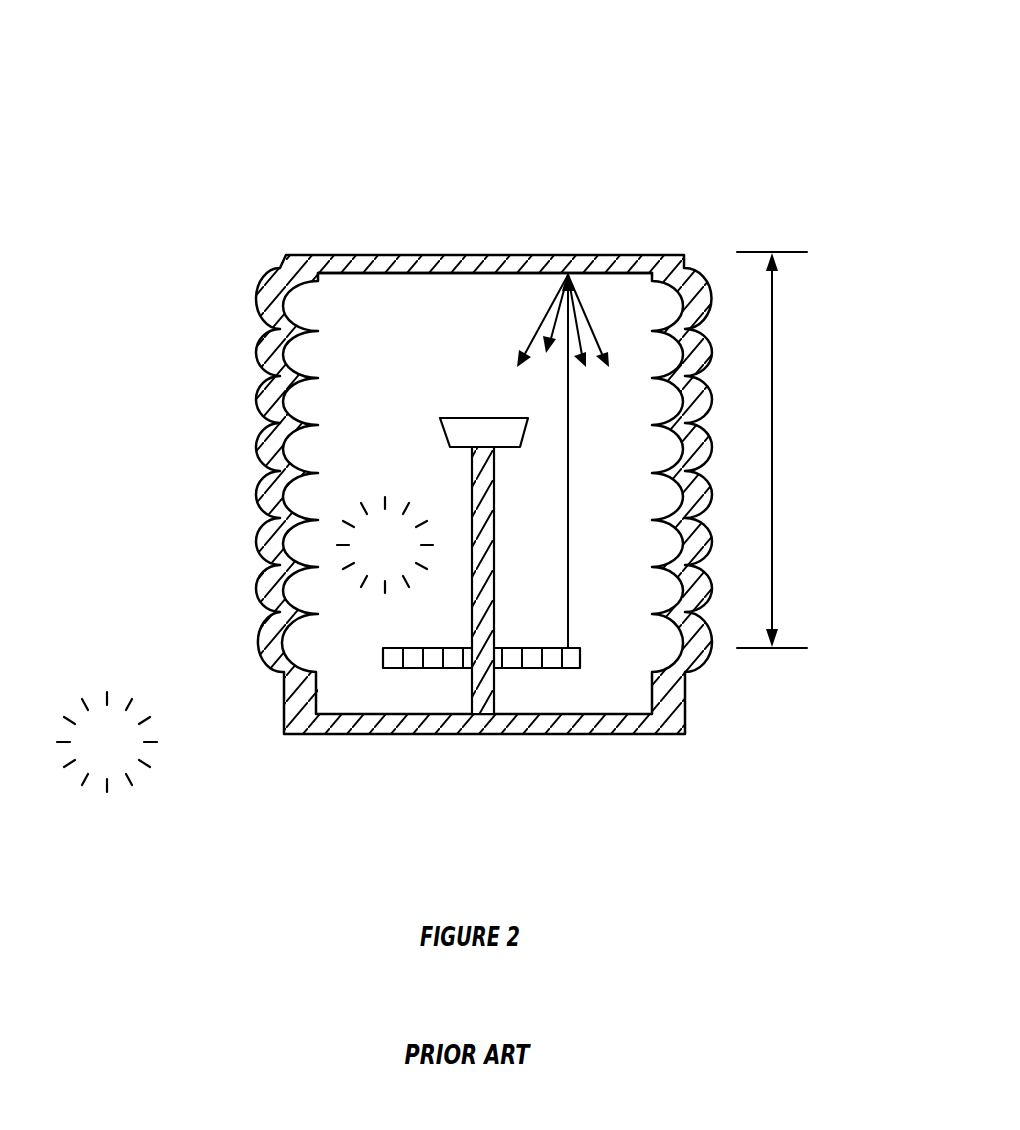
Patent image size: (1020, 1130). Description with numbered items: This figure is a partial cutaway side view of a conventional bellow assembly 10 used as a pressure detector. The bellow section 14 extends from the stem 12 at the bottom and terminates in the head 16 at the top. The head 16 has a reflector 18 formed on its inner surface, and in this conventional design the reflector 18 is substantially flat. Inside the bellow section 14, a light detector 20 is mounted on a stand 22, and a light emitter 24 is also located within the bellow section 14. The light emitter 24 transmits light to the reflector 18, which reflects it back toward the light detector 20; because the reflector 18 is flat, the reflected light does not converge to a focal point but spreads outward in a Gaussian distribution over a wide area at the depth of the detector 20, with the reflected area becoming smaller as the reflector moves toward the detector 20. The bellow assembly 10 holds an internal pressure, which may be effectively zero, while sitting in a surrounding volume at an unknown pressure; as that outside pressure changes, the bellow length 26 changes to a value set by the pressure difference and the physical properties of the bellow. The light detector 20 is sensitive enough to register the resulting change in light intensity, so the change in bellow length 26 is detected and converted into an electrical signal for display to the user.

The bellow assembly 10 is at (590, 172).
The stem 12 is at (684, 703).
The bellow section 14 is at (257, 448).
The head 16 is at (442, 255).
The reflector 18 is at (487, 274).
The light detector 20 is at (442, 440).
The stand 22 is at (495, 687).
The light emitter 24 is at (413, 648).
The bellow length 26 is at (773, 449).